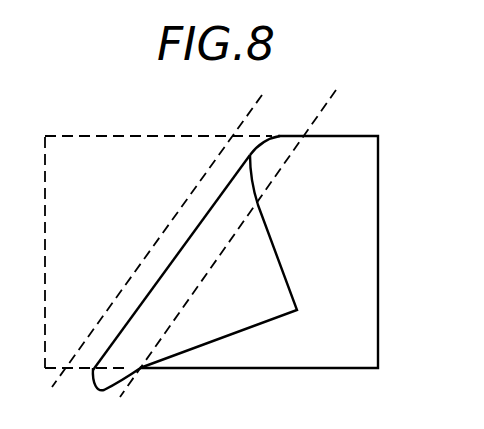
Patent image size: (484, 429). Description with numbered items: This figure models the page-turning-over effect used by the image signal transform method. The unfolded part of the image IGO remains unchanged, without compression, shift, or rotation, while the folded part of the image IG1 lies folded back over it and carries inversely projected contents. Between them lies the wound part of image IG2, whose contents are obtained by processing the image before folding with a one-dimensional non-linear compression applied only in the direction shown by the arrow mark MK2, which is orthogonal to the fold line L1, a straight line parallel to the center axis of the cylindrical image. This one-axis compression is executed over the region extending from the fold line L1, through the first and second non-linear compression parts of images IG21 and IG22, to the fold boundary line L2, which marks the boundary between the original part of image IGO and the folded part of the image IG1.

The unfolded part of the image IGO is at (369, 229).
The folded part of the image IG1 is at (265, 312).
The wound part of image IG2 is at (198, 240).
The first non-linear compression part of image IG21 is at (277, 145).
The second non-linear compression part of image IG22 is at (135, 335).
The fold line L1 is at (250, 112).
The fold boundary line L2 is at (322, 116).
The arrow mark MK2 is at (144, 251).